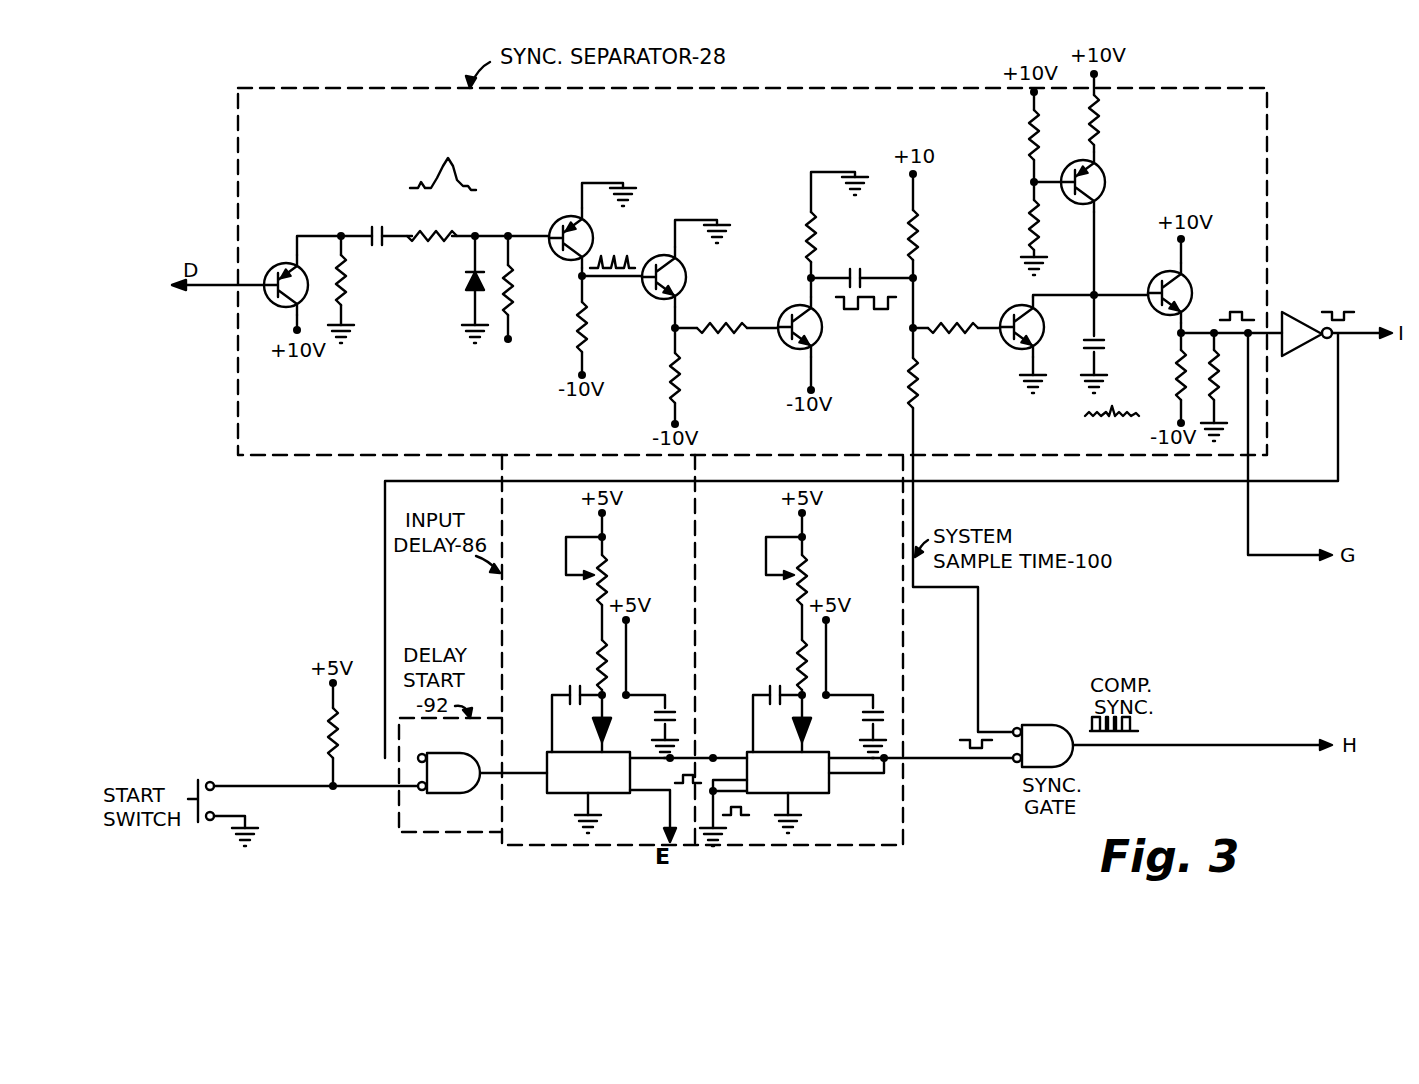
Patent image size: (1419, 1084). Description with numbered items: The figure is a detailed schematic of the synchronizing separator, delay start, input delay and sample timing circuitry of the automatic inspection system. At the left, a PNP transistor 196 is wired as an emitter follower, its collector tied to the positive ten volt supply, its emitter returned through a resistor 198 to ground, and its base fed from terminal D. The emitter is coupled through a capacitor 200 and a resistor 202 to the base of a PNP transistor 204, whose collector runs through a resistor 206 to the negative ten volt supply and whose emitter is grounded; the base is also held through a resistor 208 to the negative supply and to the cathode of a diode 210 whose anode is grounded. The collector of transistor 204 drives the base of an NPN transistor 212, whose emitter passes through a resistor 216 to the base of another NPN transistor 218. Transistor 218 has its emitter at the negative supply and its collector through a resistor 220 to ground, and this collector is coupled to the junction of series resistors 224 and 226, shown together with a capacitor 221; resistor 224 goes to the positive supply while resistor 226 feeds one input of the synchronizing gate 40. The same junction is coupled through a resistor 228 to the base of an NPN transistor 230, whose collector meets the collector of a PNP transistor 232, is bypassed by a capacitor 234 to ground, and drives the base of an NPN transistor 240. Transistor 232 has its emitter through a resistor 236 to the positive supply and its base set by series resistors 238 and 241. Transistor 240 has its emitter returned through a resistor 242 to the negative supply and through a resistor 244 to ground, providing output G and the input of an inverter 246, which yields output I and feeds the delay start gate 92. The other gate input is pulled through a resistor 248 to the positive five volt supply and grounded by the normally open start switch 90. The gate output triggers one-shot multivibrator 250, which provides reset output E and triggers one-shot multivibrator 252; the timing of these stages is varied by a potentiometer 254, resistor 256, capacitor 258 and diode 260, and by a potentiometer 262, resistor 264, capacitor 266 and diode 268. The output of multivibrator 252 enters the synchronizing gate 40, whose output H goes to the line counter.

The synchronizing gate 40 is at (1038, 722).
The start switch 90 is at (211, 787).
The delay start gate 92 is at (449, 773).
The PNP transistor 196 is at (290, 266).
The resistor 198 is at (347, 287).
The capacitor 200 is at (380, 228).
The resistor 202 is at (426, 232).
The PNP transistor 204 is at (568, 220).
The resistor 206 is at (586, 330).
The resistor 208 is at (513, 286).
The diode 210 is at (466, 304).
The NPN transistor 212 is at (689, 275).
The resistor 216 is at (728, 322).
The NPN transistor 218 is at (788, 344).
The resistor 220 is at (818, 235).
The capacitor 221 is at (877, 258).
The resistor 224 is at (920, 235).
The resistor 226 is at (921, 383).
The resistor 228 is at (945, 322).
The NPN transistor 230 is at (1041, 337).
The PNP transistor 232 is at (1107, 190).
The capacitor 234 is at (1100, 340).
The resistor 236 is at (1103, 134).
The resistor 238 is at (1028, 140).
The NPN transistor 240 is at (1191, 280).
The resistor 241 is at (1026, 230).
The resistor 242 is at (1173, 374).
The resistor 244 is at (1222, 384).
The inverter 246 is at (1296, 312).
The resistor 248 is at (326, 736).
The multivibrator 250 is at (562, 796).
The one-shot multivibrator 252 is at (819, 797).
The potentiometer 254 is at (610, 590).
The resistor 256 is at (592, 666).
The capacitor 258 is at (571, 690).
The diode 260 is at (583, 734).
The potentiometer 262 is at (806, 588).
The resistor 264 is at (795, 660).
The capacitor 266 is at (768, 690).
The diode 268 is at (814, 712).